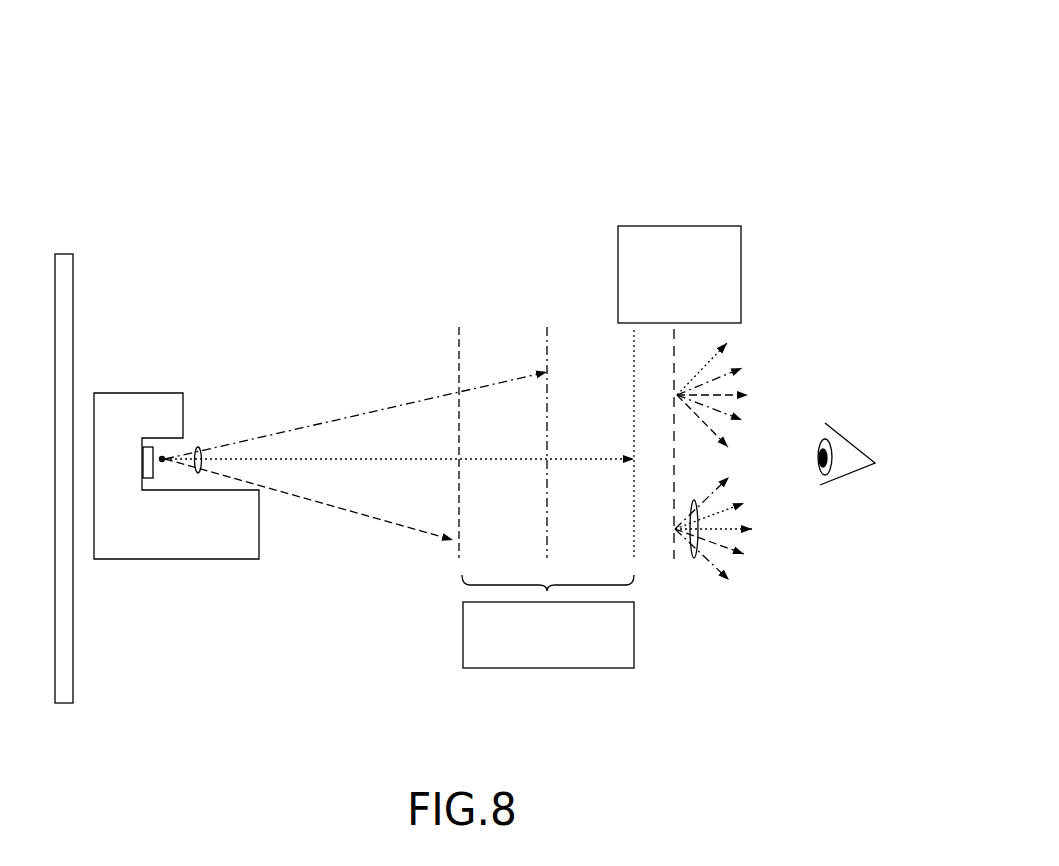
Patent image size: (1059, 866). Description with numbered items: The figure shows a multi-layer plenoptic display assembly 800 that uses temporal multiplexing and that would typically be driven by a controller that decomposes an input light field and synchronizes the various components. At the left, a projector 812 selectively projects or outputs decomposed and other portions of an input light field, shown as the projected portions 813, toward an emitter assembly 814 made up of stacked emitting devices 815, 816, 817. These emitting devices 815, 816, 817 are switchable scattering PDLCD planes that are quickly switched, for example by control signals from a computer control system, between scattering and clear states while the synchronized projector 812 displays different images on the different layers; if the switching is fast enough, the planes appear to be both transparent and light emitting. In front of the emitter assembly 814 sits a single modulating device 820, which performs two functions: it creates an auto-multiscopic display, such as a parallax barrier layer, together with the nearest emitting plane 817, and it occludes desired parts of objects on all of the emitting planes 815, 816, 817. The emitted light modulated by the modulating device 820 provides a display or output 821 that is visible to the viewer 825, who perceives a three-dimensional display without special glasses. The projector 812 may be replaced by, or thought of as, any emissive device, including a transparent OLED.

The display assembly 800 is at (672, 84).
The projector 812 is at (130, 560).
The projected light field portions 813 is at (200, 447).
The emitter assembly 814 is at (575, 669).
The first emitting device 815 is at (455, 560).
The second emitting device 816 is at (540, 549).
The third emitting device 817 is at (628, 546).
The modulating device 820 is at (681, 226).
The display output 821 is at (694, 558).
The viewer 825 is at (822, 487).